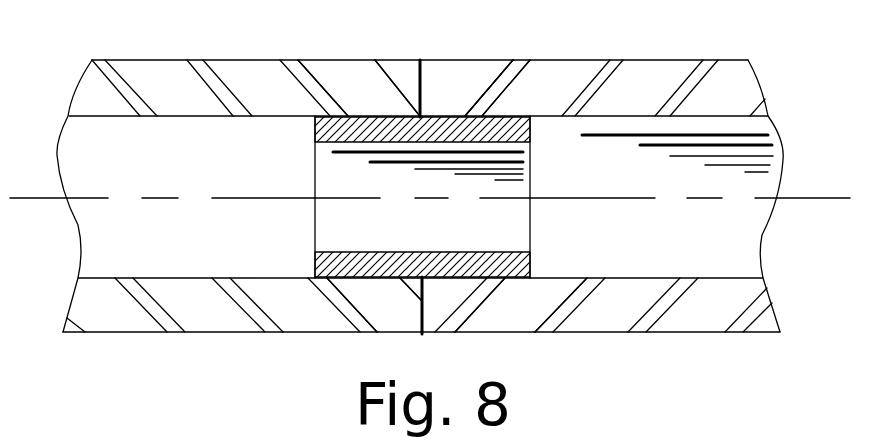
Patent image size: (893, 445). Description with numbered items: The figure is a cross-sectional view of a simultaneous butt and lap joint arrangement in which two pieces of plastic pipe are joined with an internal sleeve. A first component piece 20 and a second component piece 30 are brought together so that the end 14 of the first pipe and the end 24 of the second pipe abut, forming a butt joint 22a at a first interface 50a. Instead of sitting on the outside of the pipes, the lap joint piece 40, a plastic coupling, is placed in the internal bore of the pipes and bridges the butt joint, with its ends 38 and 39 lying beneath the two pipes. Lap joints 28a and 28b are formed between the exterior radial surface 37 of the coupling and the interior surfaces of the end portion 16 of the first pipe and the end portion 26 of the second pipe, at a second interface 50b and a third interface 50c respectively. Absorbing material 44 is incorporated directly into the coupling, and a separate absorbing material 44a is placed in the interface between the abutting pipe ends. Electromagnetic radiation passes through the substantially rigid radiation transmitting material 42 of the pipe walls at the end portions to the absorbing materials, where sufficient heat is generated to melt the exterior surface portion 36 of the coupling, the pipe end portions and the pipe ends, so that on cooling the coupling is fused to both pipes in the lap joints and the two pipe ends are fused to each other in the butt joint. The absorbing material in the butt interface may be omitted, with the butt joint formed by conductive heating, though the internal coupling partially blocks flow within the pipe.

The end of first component piece 14 is at (418, 83).
The end portion of first component piece 16 is at (360, 72).
The first component piece 20 is at (80, 163).
The butt joint 22a is at (418, 52).
The end of second component piece 24 is at (422, 83).
The end portion of second component piece 26 is at (482, 77).
The lap joint configuration 28a is at (412, 116).
The lap joint configuration 28b is at (500, 116).
The second component piece 30 is at (735, 243).
The exterior surface portion of coupling 36 is at (403, 197).
The exterior radial surface of coupling 37 is at (522, 278).
The end of plastic coupling 38 is at (315, 135).
The end of plastic coupling 39 is at (530, 134).
The lap joint piece 40 is at (345, 170).
The radiation transmitting material 42 is at (137, 67).
The absorbing material 44 is at (378, 252).
The absorbing material 44a is at (422, 332).
The first interface 50a is at (420, 318).
The second interface 50b is at (372, 278).
The third interface 50c is at (525, 275).